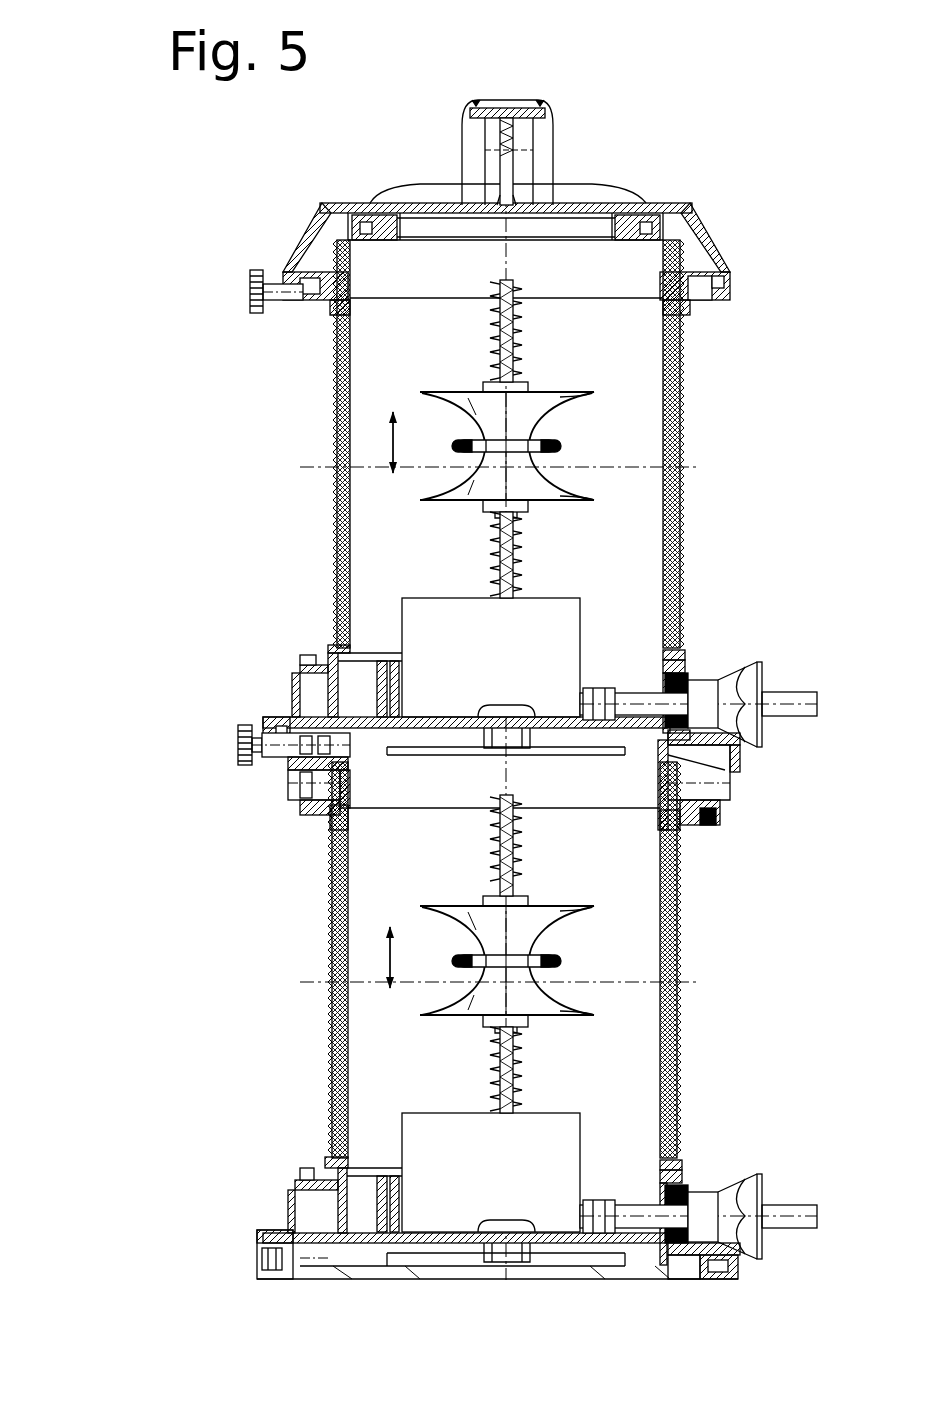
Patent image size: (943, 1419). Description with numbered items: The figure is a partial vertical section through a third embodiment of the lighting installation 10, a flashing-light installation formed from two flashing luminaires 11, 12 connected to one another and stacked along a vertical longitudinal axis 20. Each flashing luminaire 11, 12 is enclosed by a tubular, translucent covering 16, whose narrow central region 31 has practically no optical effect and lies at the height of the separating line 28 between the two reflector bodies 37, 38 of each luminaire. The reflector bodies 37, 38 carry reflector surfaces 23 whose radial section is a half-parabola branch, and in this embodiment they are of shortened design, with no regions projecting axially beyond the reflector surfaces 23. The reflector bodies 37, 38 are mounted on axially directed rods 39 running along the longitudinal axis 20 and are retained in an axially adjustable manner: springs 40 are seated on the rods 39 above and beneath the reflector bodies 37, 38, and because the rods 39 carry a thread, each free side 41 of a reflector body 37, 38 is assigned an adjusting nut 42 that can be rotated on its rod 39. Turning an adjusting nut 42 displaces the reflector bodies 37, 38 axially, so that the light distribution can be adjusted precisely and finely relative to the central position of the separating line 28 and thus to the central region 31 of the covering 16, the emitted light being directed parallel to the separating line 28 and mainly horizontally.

The lighting installation 10 is at (717, 128).
The flashing luminaire 11 is at (232, 518).
The flashing luminaire 12 is at (232, 955).
The translucent covering 16 is at (690, 590).
The longitudinal axis 20 is at (515, 98).
The reflector surface 23 is at (565, 405).
The separating line 28 is at (340, 466).
The central region 31 is at (560, 450).
The reflector body 37 is at (484, 382).
The reflector body 38 is at (470, 506).
The rod 39 is at (528, 318).
The spring 40 is at (492, 318).
The free side 41 is at (594, 390).
The adjusting nut 42 is at (478, 395).